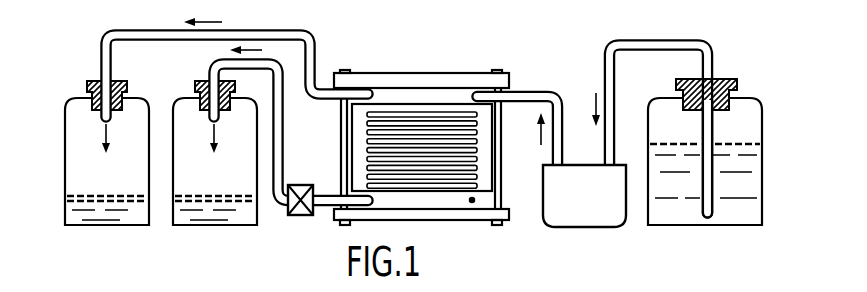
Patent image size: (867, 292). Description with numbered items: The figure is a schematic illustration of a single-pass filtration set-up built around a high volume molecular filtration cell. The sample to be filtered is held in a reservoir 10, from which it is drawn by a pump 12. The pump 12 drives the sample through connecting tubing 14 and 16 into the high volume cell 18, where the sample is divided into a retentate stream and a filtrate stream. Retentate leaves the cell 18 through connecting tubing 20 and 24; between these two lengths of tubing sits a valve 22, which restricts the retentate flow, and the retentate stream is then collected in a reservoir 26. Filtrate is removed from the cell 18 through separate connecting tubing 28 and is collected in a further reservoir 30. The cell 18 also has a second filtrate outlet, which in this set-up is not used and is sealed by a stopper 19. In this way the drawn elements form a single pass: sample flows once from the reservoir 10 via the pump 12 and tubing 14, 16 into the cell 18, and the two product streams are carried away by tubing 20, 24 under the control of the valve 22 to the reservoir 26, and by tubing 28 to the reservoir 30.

The reservoir 10 is at (750, 112).
The pump 12 is at (595, 205).
The connecting tubing 14 is at (665, 37).
The connecting tubing 16 is at (538, 91).
The high volume cell 18 is at (448, 71).
The stopper 19 is at (469, 202).
The connecting tubing 20 is at (328, 197).
The valve 22 is at (301, 216).
The connecting tubing 24 is at (283, 129).
The reservoir 26 is at (187, 106).
The connecting tubing 28 is at (247, 31).
The reservoir 30 is at (70, 106).